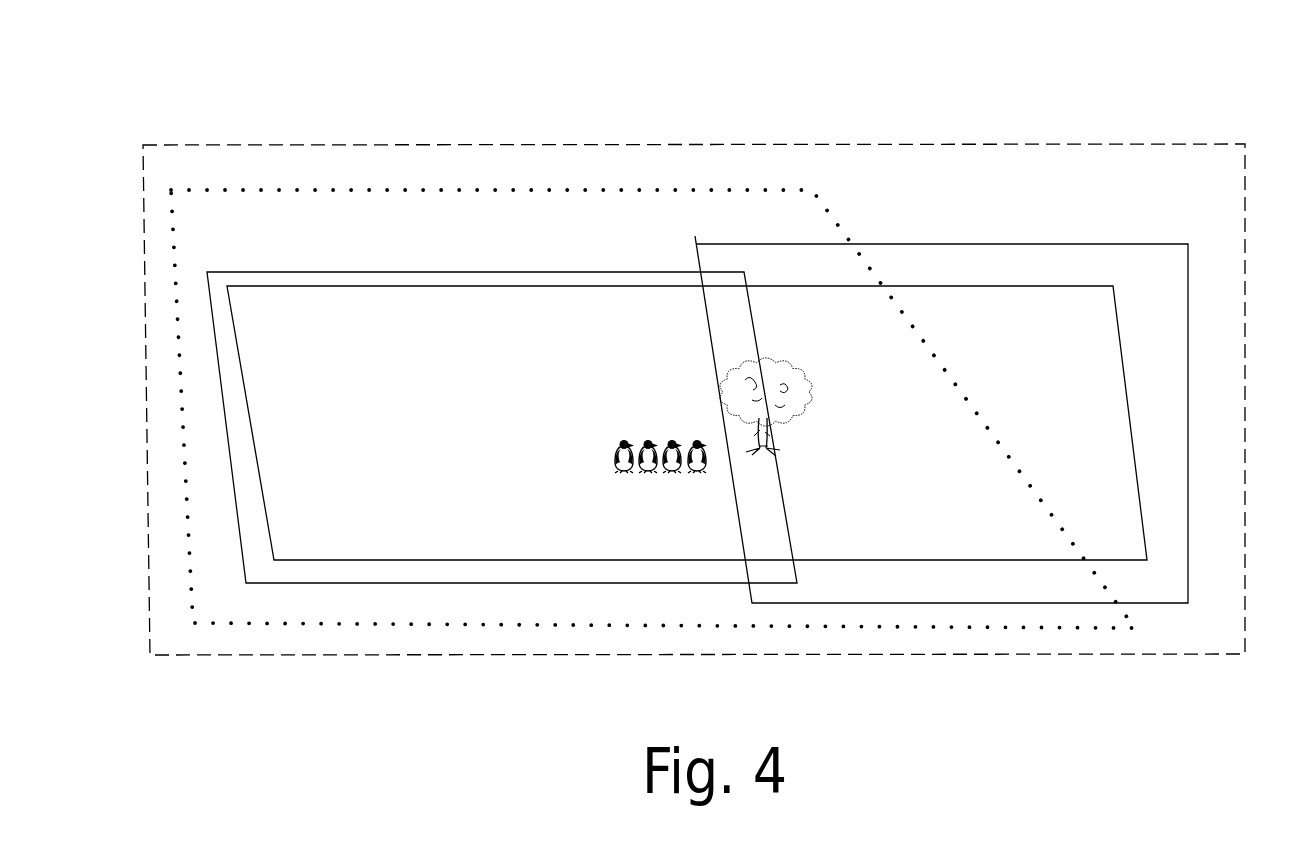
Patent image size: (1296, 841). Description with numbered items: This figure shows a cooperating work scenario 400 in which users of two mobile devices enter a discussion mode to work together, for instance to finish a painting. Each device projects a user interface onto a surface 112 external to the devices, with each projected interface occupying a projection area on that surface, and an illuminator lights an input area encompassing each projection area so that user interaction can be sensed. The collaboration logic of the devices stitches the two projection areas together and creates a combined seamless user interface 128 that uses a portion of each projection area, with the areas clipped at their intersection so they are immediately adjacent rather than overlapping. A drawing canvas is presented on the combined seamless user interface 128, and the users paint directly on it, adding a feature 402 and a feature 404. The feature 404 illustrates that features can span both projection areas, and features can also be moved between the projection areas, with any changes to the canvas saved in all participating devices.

The example scenario of combined seamless user interface 400 is at (1169, 50).
The surface 112 is at (931, 215).
The combined seamless user interface 128 is at (533, 396).
The feature 402 is at (650, 473).
The feature 404 is at (772, 457).